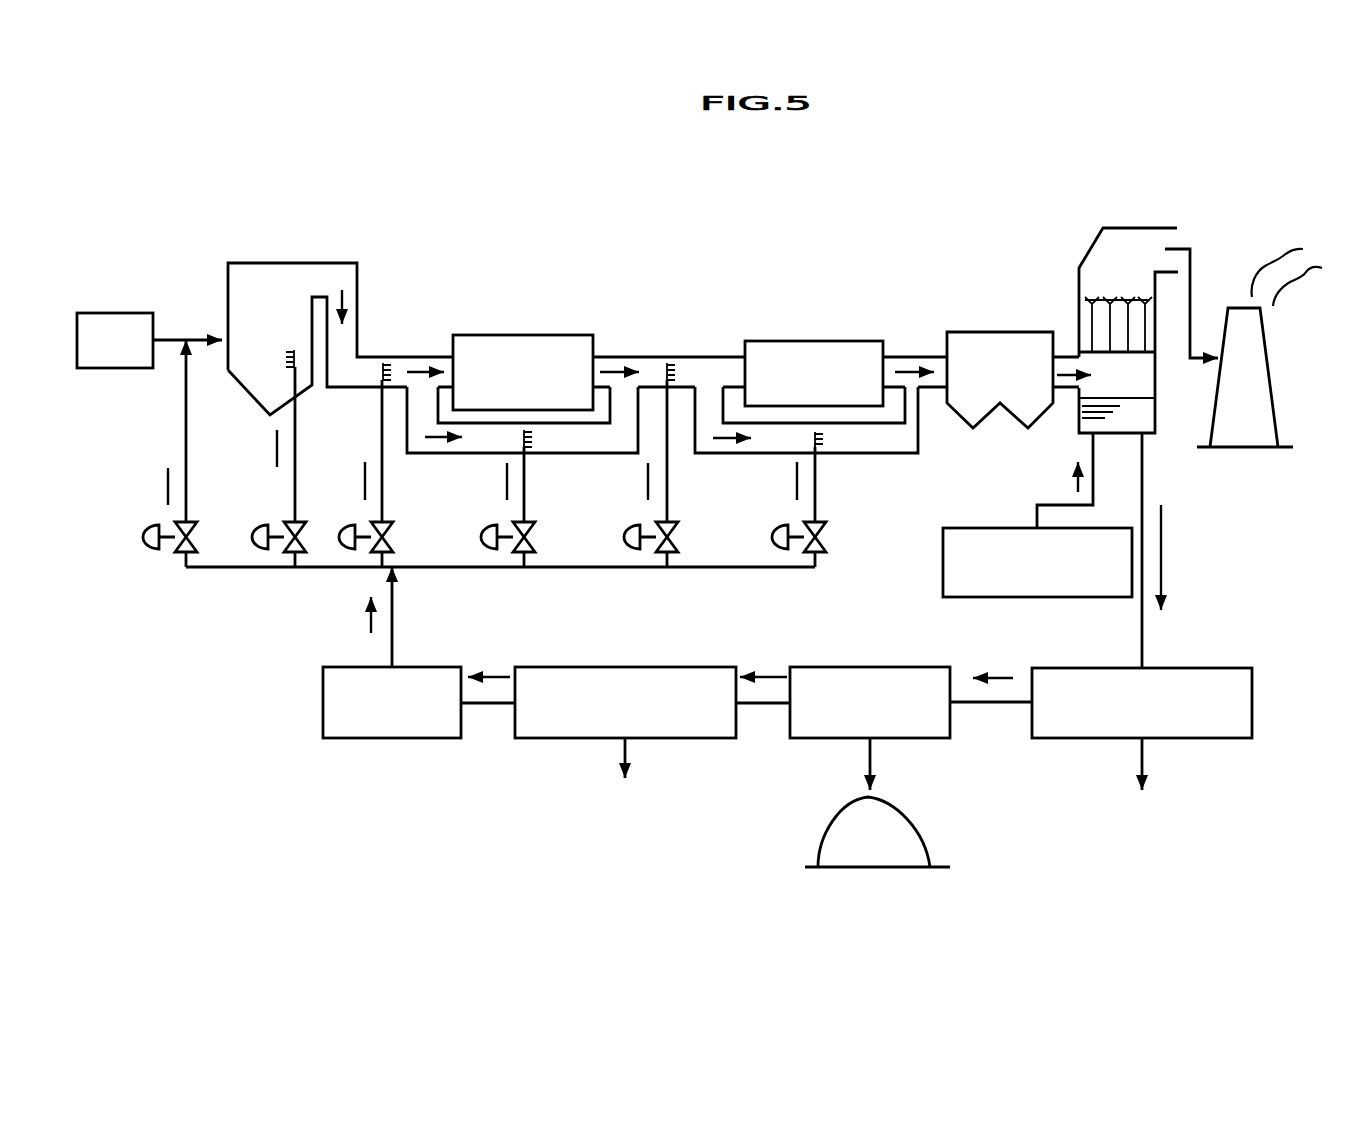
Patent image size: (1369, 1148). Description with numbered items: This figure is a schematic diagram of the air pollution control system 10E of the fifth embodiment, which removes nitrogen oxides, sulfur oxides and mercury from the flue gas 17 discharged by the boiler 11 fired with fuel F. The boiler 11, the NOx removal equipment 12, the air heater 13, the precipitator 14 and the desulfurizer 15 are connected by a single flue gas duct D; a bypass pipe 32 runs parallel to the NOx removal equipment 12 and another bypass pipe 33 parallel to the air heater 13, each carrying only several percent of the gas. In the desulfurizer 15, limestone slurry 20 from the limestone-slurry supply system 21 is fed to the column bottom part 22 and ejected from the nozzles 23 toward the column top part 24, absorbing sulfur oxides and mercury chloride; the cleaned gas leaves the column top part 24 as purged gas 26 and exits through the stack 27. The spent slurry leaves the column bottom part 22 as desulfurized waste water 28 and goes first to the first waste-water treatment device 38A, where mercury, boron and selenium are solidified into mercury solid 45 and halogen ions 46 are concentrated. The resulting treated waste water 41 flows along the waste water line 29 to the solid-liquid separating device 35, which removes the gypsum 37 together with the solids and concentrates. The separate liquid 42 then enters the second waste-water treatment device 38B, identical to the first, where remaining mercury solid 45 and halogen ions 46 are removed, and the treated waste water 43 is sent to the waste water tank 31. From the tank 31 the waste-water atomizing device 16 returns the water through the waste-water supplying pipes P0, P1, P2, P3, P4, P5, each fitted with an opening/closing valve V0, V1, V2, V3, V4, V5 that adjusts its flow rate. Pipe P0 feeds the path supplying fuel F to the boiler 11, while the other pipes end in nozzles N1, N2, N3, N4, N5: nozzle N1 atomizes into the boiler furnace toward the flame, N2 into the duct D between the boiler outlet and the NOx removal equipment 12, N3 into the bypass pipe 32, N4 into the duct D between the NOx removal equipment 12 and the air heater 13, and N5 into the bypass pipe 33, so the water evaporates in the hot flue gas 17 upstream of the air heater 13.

The air pollution control system 10E is at (690, 238).
The fuel F is at (118, 313).
The boiler 11 is at (253, 263).
The flue gas 17 is at (1063, 372).
The NOx removal equipment 12 is at (538, 335).
The air heater 13 is at (815, 341).
The precipitator 14 is at (1003, 332).
The desulfurizer 15 is at (1165, 296).
The waste-water atomizing device 16 is at (237, 643).
The limestone slurry 20 is at (1160, 460).
The limestone-slurry supply system 21 is at (985, 528).
The column bottom part 22 is at (1155, 417).
The nozzles 23 is at (1148, 340).
The column top part 24 is at (1093, 245).
The purged gas 26 is at (1193, 278).
The stack 27 is at (1268, 340).
The desulfurized waste water 28 is at (1236, 611).
The waste water line 29 is at (1000, 702).
The waste water tank 31 is at (400, 739).
The bypass pipe 32 is at (588, 454).
The bypass pipe 33 is at (898, 454).
The solid-liquid separating device 35 is at (845, 667).
The gypsum 37 is at (900, 818).
The first waste-water treatment device 38A is at (1252, 702).
The second waste-water treatment device 38B is at (637, 667).
The treated waste water 41 is at (996, 644).
The separate liquid 42 is at (766, 643).
The treated waste water 43 is at (166, 497).
The mercury solid 45 is at (748, 858).
The halogen ion 46 is at (885, 812).
The flue gas duct D is at (716, 357).
The nozzle N1 is at (288, 357).
The nozzle N2 is at (385, 372).
The nozzle N3 is at (533, 440).
The nozzle N4 is at (670, 363).
The nozzle N5 is at (822, 440).
The waste-water supplying pipe P0 is at (186, 443).
The waste-water supplying pipe P1 is at (295, 498).
The waste-water supplying pipe P2 is at (382, 437).
The waste-water supplying pipe P3 is at (524, 511).
The waste-water supplying pipe P4 is at (667, 511).
The waste-water supplying pipe P5 is at (815, 510).
The opening/closing valve V0 is at (152, 550).
The opening/closing valve V1 is at (252, 535).
The opening/closing valve V2 is at (339, 533).
The opening/closing valve V3 is at (480, 537).
The opening/closing valve V4 is at (623, 537).
The opening/closing valve V5 is at (771, 537).